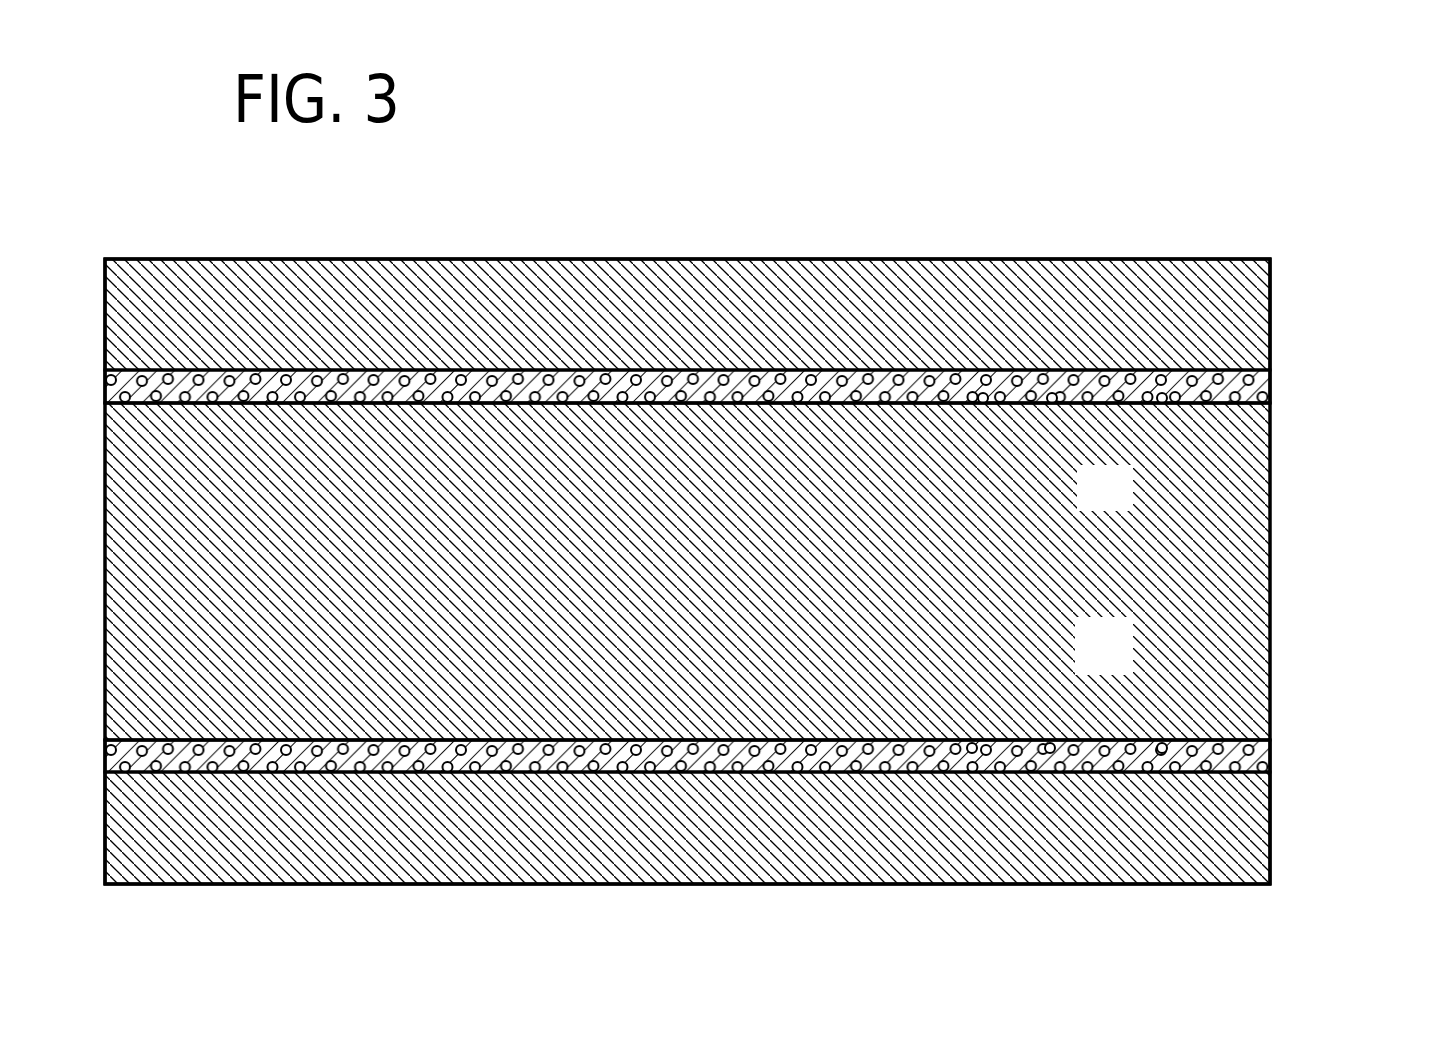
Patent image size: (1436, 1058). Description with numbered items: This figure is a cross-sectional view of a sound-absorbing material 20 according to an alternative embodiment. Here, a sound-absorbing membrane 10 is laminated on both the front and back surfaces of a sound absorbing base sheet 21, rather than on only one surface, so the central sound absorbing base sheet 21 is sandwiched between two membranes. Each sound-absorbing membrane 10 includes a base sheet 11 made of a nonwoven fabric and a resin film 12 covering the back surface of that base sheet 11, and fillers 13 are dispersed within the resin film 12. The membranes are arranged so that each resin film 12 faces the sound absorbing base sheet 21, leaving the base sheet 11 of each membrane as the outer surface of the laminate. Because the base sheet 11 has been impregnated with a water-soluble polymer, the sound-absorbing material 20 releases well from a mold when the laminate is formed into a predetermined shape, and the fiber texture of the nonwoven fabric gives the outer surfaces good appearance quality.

The sound-absorbing membrane 10 is at (1213, 248).
The base sheet 11 is at (1252, 288).
The resin film 12 is at (1273, 387).
The fillers 13 is at (983, 401).
The sound-absorbing material 20 is at (1053, 92).
The sound absorbing base sheet 21 is at (1228, 552).